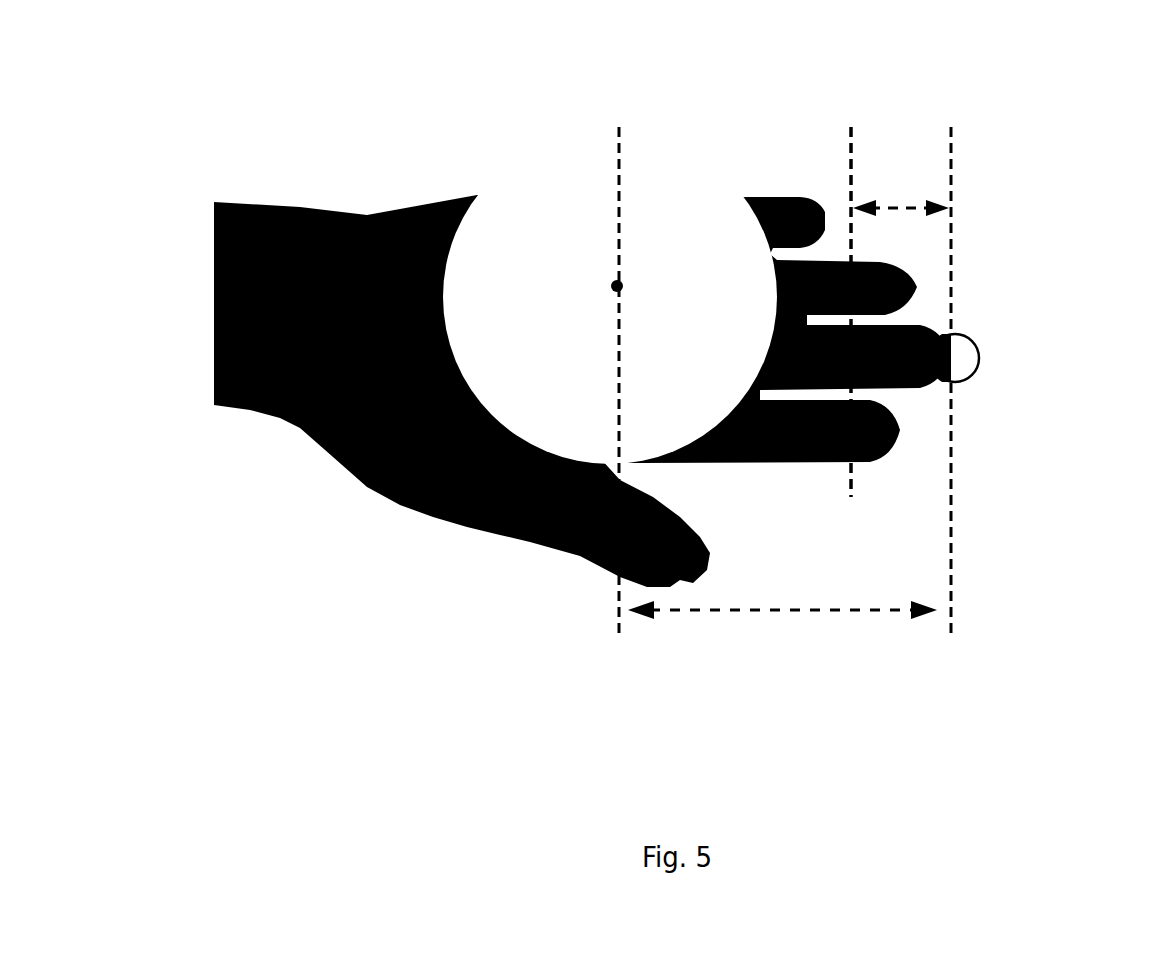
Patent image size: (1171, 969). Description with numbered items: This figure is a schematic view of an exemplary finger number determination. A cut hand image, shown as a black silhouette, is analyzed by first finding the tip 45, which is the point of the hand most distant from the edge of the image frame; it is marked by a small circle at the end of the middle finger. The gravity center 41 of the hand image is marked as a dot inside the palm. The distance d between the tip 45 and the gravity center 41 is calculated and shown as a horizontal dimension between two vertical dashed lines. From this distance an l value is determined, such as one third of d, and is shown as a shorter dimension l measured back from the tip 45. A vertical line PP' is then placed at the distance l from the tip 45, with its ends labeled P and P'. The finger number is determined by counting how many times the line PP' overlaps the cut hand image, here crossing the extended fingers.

The gravity center 41 is at (617, 286).
The tip 45 is at (977, 345).
The line PP' endpoint P is at (819, 312).
The line PP' endpoint P' is at (801, 491).
The l value l is at (901, 187).
The distance d is at (782, 628).